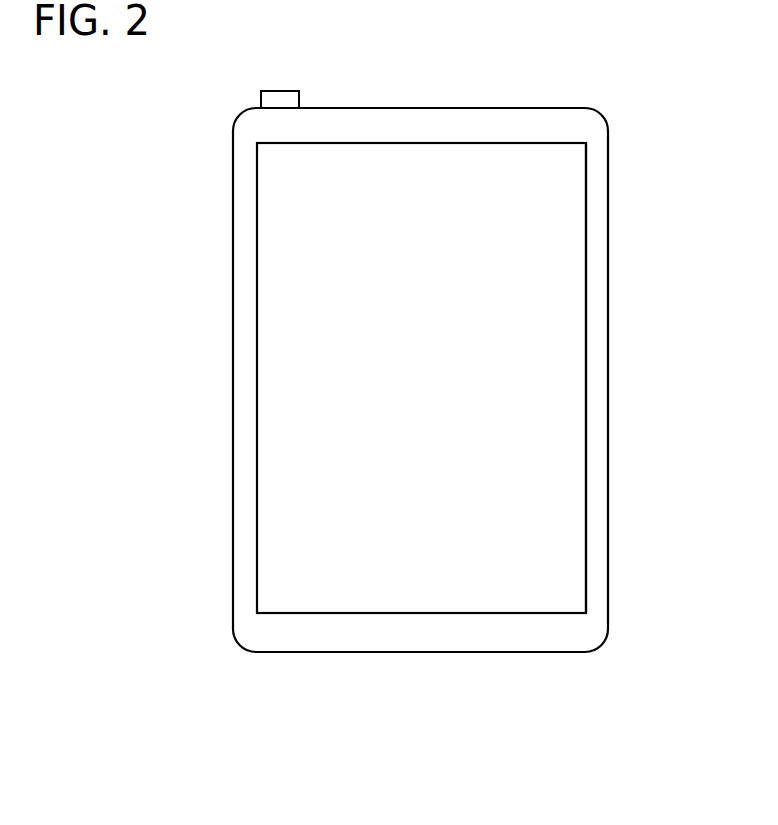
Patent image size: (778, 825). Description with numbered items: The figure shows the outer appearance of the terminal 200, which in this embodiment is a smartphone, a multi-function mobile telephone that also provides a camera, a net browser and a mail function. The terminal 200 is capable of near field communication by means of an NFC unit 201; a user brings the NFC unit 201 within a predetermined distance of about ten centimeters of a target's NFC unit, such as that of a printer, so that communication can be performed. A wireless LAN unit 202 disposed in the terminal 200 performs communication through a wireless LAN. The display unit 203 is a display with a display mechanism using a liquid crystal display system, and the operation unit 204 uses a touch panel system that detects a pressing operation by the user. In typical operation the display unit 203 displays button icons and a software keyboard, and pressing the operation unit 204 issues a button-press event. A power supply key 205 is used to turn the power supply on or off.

The terminal 200 is at (391, 58).
The NFC unit 201 is at (418, 630).
The wireless LAN unit 202 is at (488, 127).
The display unit 203 is at (283, 273).
The operation unit 204 is at (538, 355).
The power supply key 205 is at (282, 100).